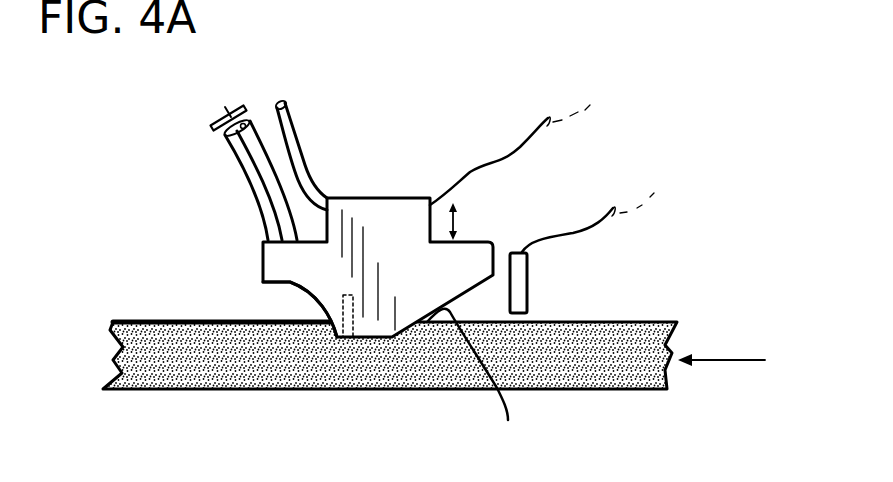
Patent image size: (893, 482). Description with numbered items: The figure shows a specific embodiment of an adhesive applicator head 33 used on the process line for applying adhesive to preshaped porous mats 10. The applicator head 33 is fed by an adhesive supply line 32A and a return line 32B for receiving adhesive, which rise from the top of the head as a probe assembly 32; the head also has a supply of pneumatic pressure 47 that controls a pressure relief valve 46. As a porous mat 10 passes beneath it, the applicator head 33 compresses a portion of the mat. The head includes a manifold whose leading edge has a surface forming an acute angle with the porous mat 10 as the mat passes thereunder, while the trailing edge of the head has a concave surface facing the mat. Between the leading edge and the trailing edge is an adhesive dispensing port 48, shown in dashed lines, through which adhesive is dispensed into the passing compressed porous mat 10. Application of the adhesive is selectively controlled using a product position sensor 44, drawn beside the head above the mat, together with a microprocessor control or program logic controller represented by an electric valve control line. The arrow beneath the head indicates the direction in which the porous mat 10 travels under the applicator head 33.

The preshaped porous mat 10 is at (603, 378).
The probe assembly 32 is at (218, 108).
The adhesive supply line 32A is at (224, 137).
The return line 32B is at (247, 122).
The adhesive applicator head 33 is at (275, 262).
The product position sensor 44 is at (527, 268).
The pressure relief valve 46 is at (382, 208).
The supply of pneumatic pressure 47 is at (300, 132).
The adhesive dispensing port 48 is at (347, 308).